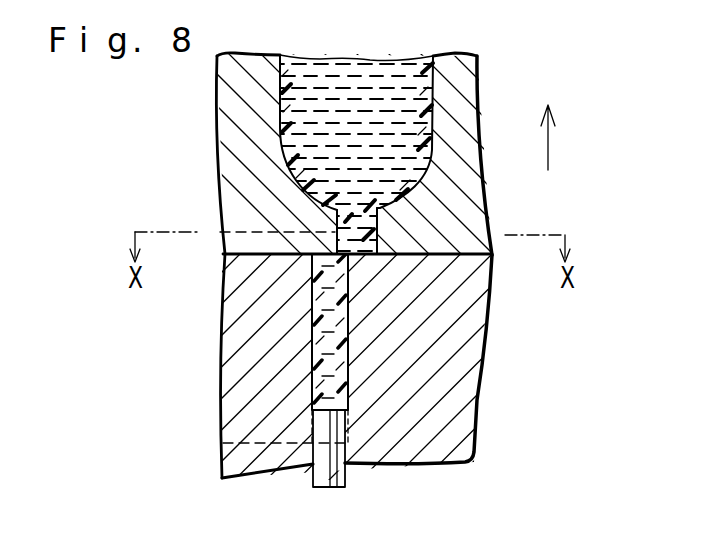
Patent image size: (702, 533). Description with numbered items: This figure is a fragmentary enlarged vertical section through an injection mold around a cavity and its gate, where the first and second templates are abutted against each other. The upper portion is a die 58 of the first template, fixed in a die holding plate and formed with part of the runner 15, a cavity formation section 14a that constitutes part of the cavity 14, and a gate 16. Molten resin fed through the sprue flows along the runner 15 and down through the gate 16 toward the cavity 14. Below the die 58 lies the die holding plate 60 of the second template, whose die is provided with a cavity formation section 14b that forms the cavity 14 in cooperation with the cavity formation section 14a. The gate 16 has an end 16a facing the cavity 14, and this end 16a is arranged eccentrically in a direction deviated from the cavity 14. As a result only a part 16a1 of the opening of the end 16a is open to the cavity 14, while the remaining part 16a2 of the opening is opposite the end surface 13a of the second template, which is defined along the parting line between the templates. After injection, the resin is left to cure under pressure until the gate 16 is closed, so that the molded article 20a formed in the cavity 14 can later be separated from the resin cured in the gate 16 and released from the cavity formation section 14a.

The runner 15 is at (433, 98).
The die 58 is at (463, 87).
The gate 16 is at (388, 205).
The end of the gate 16a is at (378, 240).
The end surface of the second template 13a is at (492, 256).
The remaining part of the opening 16a2 is at (348, 257).
The part of the opening 16a1 is at (348, 288).
The die holding plate 60 is at (453, 388).
The cavity 14 is at (135, 323).
The cavity formation section 14a is at (312, 256).
The cavity formation section 14b is at (312, 375).
The molded article 20a is at (474, 444).